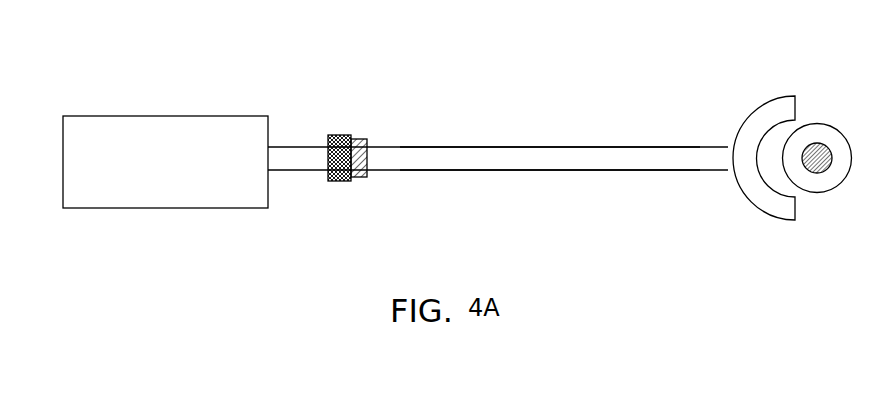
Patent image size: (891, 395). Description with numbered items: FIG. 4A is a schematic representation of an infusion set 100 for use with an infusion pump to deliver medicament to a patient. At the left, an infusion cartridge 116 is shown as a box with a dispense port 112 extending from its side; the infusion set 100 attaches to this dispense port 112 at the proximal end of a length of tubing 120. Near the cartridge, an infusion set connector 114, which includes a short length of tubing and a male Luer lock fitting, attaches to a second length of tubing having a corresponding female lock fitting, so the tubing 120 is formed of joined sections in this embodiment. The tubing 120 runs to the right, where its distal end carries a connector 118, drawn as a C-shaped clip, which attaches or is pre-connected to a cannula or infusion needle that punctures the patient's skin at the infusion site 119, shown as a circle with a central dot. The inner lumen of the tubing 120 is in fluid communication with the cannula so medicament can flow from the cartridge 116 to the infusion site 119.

The infusion set 100 is at (433, 104).
The dispense port 112 is at (273, 158).
The infusion set connector 114 is at (352, 180).
The infusion cartridge 116 is at (164, 125).
The connector 118 is at (740, 129).
The infusion site 119 is at (826, 138).
The tubing 120 is at (487, 160).